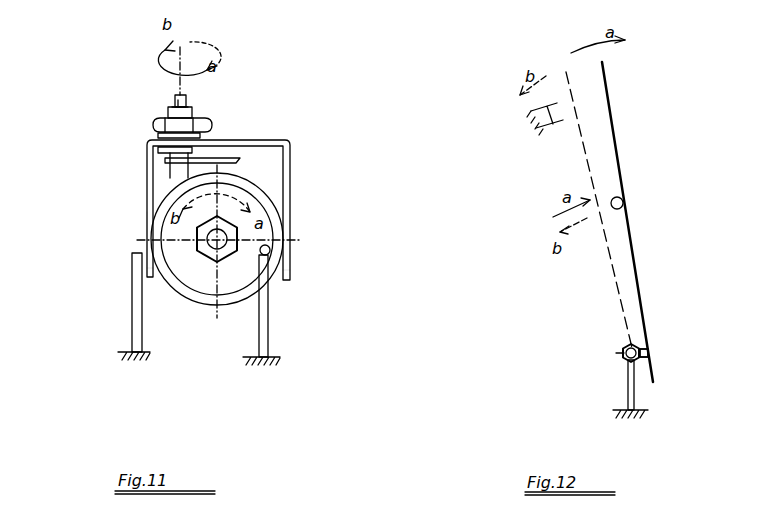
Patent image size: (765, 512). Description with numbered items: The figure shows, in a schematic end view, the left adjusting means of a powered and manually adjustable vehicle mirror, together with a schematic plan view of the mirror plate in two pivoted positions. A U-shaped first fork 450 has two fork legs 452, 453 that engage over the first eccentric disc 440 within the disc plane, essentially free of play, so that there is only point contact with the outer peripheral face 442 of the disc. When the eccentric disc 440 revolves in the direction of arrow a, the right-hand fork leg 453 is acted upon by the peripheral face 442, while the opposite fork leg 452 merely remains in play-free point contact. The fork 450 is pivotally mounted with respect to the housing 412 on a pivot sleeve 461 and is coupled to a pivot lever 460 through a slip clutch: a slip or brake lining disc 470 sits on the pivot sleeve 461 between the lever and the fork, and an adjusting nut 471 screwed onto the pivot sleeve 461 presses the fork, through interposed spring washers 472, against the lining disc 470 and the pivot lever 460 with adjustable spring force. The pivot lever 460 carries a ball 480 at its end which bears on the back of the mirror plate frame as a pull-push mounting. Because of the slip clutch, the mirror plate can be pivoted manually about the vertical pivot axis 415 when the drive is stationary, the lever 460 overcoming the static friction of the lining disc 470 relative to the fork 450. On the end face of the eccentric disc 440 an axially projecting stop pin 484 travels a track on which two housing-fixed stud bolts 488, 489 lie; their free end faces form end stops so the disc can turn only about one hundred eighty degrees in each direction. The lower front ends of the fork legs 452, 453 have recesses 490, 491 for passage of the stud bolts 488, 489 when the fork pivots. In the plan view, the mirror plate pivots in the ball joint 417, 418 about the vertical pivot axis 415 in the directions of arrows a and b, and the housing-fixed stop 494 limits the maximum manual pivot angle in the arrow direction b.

In FIG. 11, the adjusting nut 471 is at (158, 120).
In FIG. 11, the spring washers 472 is at (160, 136).
In FIG. 11, the slip or brake lining disc 470 is at (150, 143).
In FIG. 11, the pivot lever 460 is at (170, 160).
In FIG. 11, the pivot sleeve 461 is at (178, 178).
In FIG. 11, the fork leg 452 is at (145, 212).
In FIG. 11, the first fork 450 is at (262, 138).
In FIG. 11, the outer peripheral face 442 is at (262, 178).
In FIG. 11, the fork leg 453 is at (287, 202).
In FIG. 11, the stop pin 484 is at (270, 246).
In FIG. 11, the recess 491 is at (287, 274).
In FIG. 11, the recess 490 is at (145, 268).
In FIG. 11, the stud bolt 488 is at (133, 302).
In FIG. 11, the stud bolt 489 is at (265, 320).
In FIG. 11, the eccentric disc 440 is at (205, 288).
In FIG. 11, the housing 412 is at (138, 357).
In FIG. 12, the housing 412 is at (632, 418).
In FIG. 12, the ball 480 is at (611, 200).
In FIG. 12, the stop 494 is at (530, 118).
In FIG. 12, the vertical pivot axis 415 is at (624, 343).
In FIG. 12, the ball joint 417 is at (622, 353).
In FIG. 12, the ball joint 418 is at (645, 345).